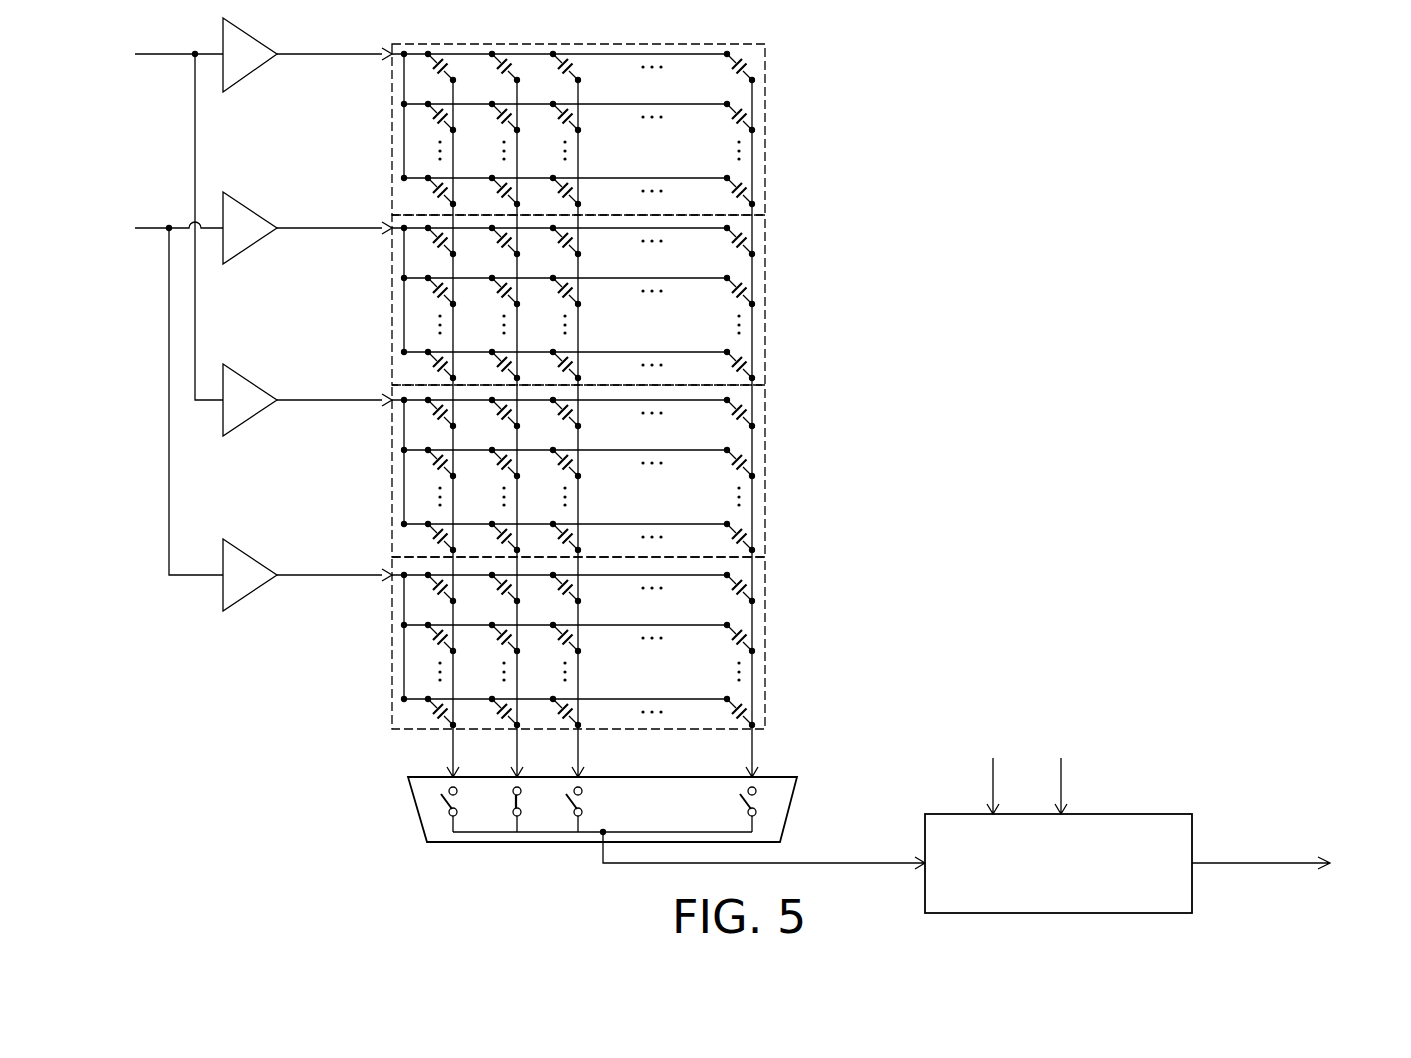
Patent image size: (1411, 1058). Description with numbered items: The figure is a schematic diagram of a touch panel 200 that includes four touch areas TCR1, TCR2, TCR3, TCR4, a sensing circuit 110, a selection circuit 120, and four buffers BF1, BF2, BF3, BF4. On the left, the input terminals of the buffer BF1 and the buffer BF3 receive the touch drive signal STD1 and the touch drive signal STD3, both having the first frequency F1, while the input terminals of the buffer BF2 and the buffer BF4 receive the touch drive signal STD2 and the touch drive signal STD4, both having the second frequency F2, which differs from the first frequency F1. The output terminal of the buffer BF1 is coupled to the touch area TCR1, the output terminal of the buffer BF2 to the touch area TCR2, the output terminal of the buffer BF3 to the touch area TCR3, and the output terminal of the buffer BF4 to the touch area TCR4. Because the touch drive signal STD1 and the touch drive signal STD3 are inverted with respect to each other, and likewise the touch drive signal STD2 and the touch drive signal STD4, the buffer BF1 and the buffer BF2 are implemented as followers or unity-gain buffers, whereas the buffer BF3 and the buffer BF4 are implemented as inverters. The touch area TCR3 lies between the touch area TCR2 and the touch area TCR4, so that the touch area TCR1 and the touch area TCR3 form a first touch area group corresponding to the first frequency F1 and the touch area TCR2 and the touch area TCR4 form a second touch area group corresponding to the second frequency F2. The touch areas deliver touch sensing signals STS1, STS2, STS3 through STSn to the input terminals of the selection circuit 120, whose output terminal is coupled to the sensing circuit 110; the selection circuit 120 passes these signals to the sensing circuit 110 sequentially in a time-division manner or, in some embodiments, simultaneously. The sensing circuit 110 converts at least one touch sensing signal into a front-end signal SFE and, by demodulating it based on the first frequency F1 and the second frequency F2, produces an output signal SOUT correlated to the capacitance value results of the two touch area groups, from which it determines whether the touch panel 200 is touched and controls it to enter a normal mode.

The touch panel 200 is at (1400, 916).
The sensing circuit 110 is at (1058, 835).
The selection circuit 120 is at (790, 816).
The front-end signal SFE is at (1158, 894).
The buffer BF1 is at (252, 72).
The buffer BF2 is at (252, 246).
The buffer BF3 is at (252, 418).
The buffer BF4 is at (252, 593).
The touch area TCR1 is at (766, 143).
The touch area TCR2 is at (766, 272).
The touch area TCR3 is at (766, 443).
The touch area TCR4 is at (766, 620).
The touch drive signal STD1 is at (329, 41).
The touch drive signal STD2 is at (329, 212).
The touch drive signal STD3 is at (329, 384).
The touch drive signal STD4 is at (329, 559).
The touch sensing signal STS1 is at (432, 428).
The touch sensing signal STS2 is at (494, 428).
The touch sensing signal STS3 is at (599, 428).
The touch sensing signal STSn is at (776, 428).
The first frequency F1 is at (995, 770).
The second frequency F2 is at (1062, 770).
The output signal SOUT is at (1273, 845).